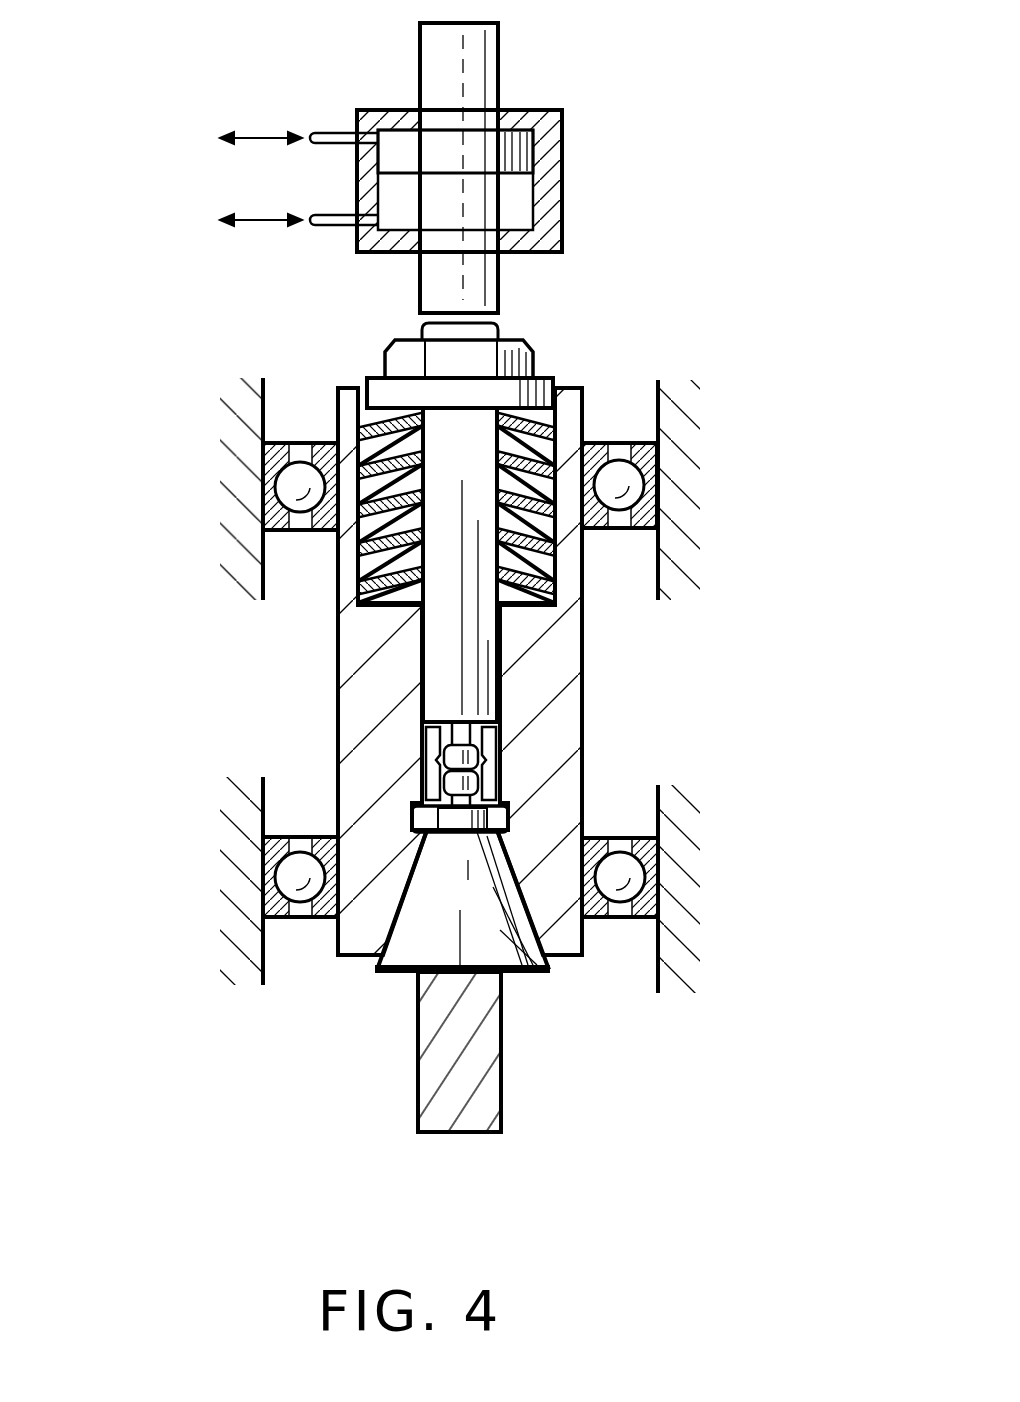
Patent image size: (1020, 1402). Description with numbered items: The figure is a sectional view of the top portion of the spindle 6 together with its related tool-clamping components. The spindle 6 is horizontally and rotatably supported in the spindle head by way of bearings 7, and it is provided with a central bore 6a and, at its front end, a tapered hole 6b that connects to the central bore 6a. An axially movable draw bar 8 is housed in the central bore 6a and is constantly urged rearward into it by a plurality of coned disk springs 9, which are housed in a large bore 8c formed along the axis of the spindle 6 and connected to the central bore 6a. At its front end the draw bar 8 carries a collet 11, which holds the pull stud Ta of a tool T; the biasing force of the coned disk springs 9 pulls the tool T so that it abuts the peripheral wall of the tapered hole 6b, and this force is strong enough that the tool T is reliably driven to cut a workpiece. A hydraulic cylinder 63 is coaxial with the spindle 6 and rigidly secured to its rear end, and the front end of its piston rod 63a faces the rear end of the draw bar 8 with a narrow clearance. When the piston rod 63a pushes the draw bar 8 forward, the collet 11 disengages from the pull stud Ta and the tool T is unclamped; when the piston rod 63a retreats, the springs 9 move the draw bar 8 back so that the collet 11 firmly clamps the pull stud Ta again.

The hydraulic cylinder 63 is at (565, 192).
The piston rod 63a is at (503, 277).
The coned disk springs 9 is at (556, 405).
The bearings 7 is at (650, 457).
The large bore 8c is at (552, 567).
The draw bar 8 is at (443, 625).
The spindle 6 is at (363, 696).
The central bore 6a is at (487, 670).
The collet 11 is at (483, 765).
The pull stud Ta is at (422, 846).
The tapered hole 6b is at (397, 913).
The tool T is at (485, 1105).